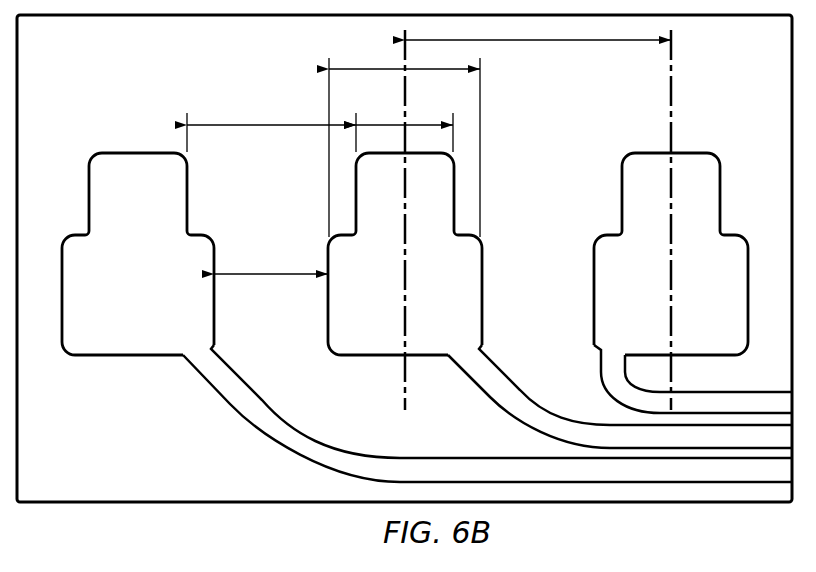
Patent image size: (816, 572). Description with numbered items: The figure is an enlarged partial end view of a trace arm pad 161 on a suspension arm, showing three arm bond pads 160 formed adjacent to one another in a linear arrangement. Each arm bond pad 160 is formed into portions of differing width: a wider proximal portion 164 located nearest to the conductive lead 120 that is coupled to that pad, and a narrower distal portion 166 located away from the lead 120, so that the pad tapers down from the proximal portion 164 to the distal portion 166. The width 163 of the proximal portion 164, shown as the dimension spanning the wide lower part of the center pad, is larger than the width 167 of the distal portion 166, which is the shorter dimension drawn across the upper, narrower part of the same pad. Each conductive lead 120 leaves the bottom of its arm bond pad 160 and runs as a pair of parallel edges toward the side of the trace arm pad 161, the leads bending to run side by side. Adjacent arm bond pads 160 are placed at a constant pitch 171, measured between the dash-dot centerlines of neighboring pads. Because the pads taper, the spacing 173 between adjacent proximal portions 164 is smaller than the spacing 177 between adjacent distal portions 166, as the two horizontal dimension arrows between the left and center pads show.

The conductive lead 120 is at (245, 427).
The arm bond pad 160 is at (169, 256).
The trace arm pad 161 is at (215, 504).
The width 163 is at (367, 68).
The proximal portion 164 is at (216, 300).
The distal portion 166 is at (137, 152).
The neck width 167 is at (425, 124).
The pitch 171 is at (548, 41).
The spacing between proximal portions 173 is at (270, 273).
The spacing between distal portions 177 is at (265, 124).